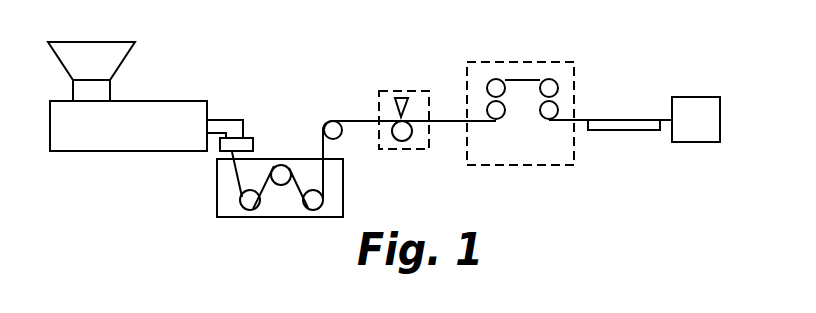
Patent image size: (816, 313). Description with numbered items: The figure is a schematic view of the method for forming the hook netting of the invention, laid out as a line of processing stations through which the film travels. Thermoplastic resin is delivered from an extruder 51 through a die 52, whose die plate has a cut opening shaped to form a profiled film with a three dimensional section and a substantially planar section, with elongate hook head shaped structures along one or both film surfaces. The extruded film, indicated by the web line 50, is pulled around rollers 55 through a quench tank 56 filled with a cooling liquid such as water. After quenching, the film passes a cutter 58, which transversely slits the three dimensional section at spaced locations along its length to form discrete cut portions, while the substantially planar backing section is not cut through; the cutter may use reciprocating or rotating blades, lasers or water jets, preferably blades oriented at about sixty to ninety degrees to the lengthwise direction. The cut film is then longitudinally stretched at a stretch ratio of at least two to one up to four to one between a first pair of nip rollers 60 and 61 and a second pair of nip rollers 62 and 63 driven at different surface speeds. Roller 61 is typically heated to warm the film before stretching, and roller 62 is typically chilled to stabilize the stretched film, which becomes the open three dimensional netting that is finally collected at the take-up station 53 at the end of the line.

The fiber 50 is at (237, 176).
The extruder 51 is at (147, 105).
The die 52 is at (235, 158).
The winder 53 is at (695, 100).
The rollers 55 is at (311, 212).
The quench tank 56 is at (338, 197).
The cutter 58 is at (395, 104).
The nip roller 60 is at (496, 119).
The nip roller 61 is at (497, 80).
The nip roller 62 is at (549, 80).
The nip roller 63 is at (554, 112).